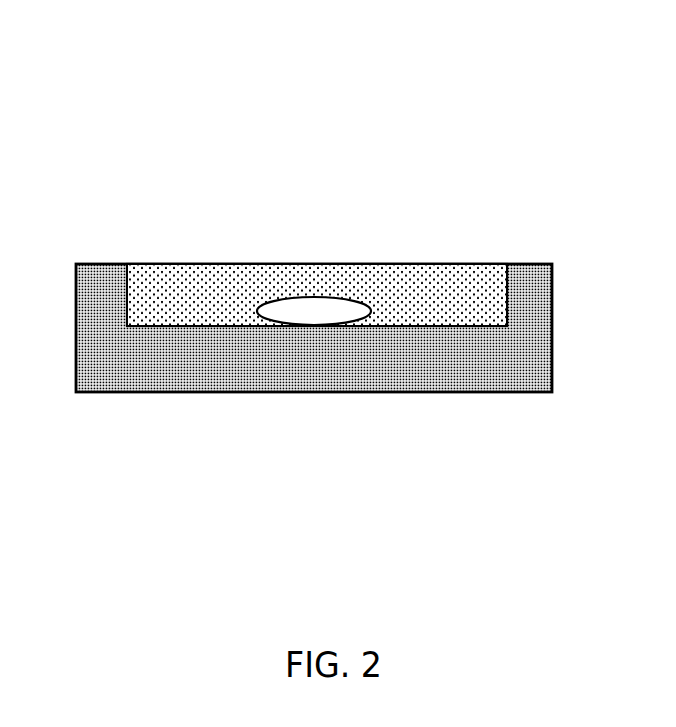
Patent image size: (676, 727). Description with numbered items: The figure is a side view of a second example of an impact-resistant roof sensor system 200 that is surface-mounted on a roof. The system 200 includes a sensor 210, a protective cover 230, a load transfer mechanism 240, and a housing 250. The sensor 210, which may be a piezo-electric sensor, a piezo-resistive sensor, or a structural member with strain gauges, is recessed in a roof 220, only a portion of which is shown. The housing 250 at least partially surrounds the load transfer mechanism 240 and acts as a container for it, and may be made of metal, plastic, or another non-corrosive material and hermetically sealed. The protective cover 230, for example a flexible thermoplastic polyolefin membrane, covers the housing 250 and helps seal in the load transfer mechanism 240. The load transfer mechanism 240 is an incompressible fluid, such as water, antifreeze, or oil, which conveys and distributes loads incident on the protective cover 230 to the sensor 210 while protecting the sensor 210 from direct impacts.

The impact-resistant roof sensor system 200 is at (158, 88).
The sensor 210 is at (313, 296).
The roof 220 is at (312, 392).
The protective cover 230 is at (212, 263).
The load transfer mechanism 240 is at (438, 288).
The housing 250 is at (507, 292).